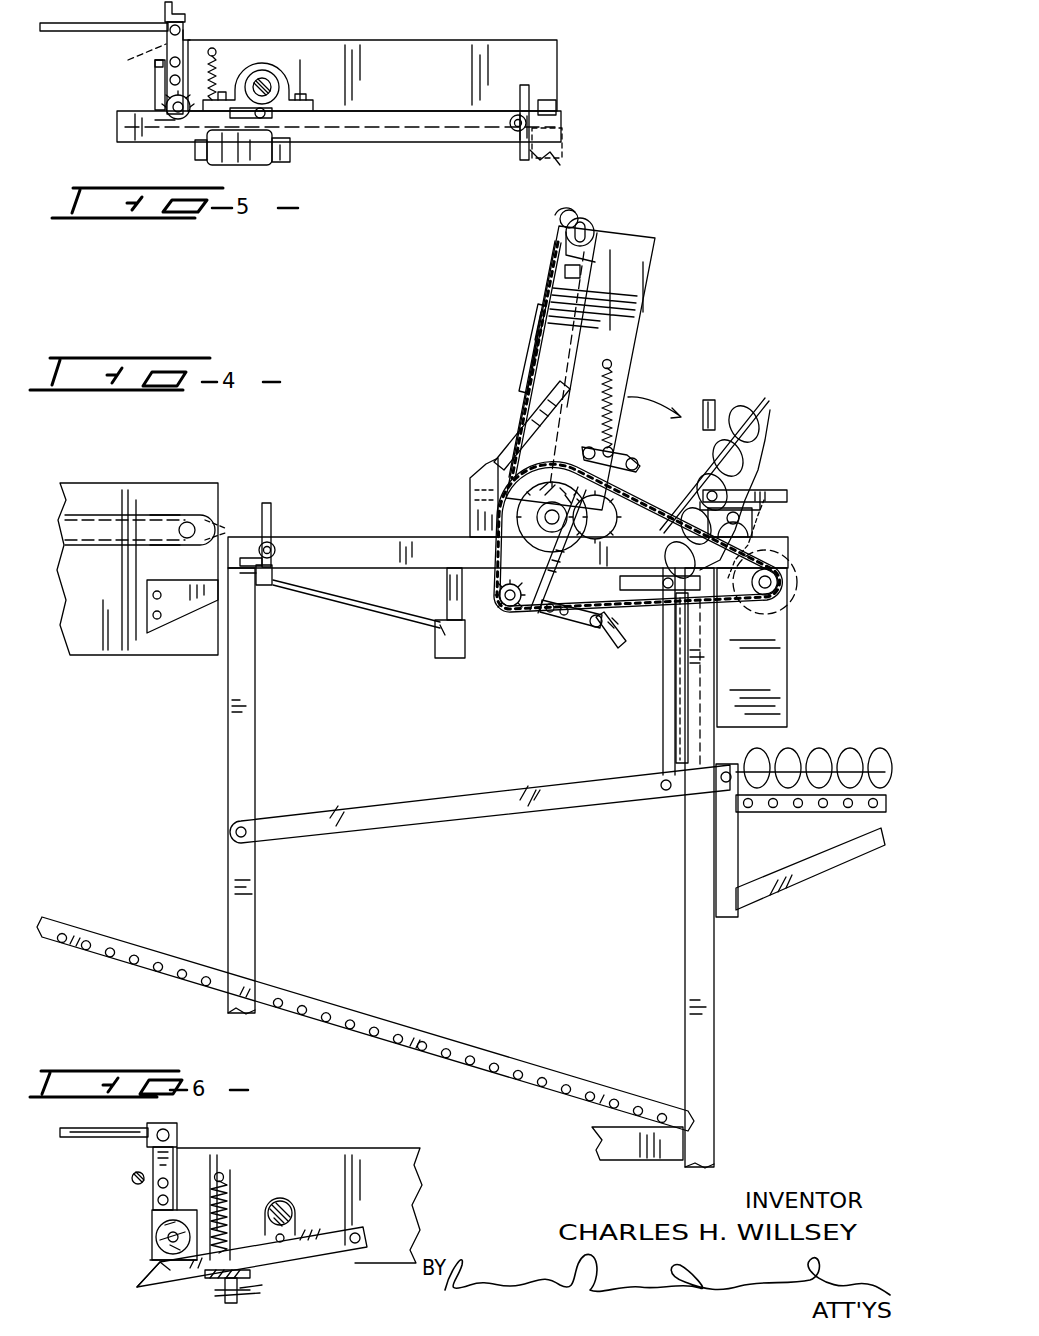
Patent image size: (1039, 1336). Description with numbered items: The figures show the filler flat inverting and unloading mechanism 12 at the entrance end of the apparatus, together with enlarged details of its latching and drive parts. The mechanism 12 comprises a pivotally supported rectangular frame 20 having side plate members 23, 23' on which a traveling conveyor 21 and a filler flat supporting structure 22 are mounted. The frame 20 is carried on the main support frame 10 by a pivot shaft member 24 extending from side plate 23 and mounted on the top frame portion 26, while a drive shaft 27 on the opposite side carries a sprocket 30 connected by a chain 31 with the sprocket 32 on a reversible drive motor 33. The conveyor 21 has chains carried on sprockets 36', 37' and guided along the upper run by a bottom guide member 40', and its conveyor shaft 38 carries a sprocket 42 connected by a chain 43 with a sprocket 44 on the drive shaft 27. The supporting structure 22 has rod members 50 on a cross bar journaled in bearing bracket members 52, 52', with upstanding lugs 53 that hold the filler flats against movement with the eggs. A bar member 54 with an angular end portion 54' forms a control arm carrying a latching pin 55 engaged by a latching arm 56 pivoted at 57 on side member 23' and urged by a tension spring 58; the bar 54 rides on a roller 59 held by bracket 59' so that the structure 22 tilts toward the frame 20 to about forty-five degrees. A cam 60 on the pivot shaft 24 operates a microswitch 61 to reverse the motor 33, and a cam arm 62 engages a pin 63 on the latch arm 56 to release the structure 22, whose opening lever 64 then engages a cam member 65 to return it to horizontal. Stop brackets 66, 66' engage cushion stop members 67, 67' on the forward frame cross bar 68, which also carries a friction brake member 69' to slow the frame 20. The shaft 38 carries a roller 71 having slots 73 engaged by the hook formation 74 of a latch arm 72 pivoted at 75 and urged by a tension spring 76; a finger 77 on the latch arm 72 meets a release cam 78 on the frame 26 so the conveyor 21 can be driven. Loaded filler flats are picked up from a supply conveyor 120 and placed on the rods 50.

In FIG. 4, the main support frame 10 is at (212, 739).
In FIG. 4, the filler flat inverting and unloading mechanism 12 is at (700, 246).
In FIG. 4, the rectangular frame 20 is at (630, 232).
In FIG. 4, the traveling conveyor 21 is at (567, 300).
In FIG. 4, the filler flat supporting structure 22 is at (755, 430).
In FIG. 5, the side plate member 23 is at (372, 63).
In FIG. 6, the side plate member 23 is at (299, 1192).
In FIG. 4, the side plate member 23' is at (599, 361).
In FIG. 6, the pivot shaft member 24 is at (286, 1205).
In FIG. 5, the top frame portion 26 is at (130, 140).
In FIG. 4, the drive shaft 27 is at (545, 516).
In FIG. 4, the sprocket 30 is at (505, 478).
In FIG. 4, the chain 31 is at (648, 592).
In FIG. 4, the sprocket 32 is at (779, 588).
In FIG. 4, the drive motor 33 is at (798, 565).
In FIG. 4, the sprocket 36' is at (595, 203).
In FIG. 4, the sprocket 37' is at (498, 611).
In FIG. 4, the conveyor shaft 38 is at (447, 588).
In FIG. 6, the conveyor shaft 38 is at (155, 1255).
In FIG. 4, the bottom guide member 40' is at (523, 348).
In FIG. 4, the sprocket 42 is at (515, 612).
In FIG. 4, the chain 43 is at (550, 608).
In FIG. 4, the sprocket 44 is at (470, 485).
In FIG. 5, the rod members 50 is at (88, 31).
In FIG. 6, the rod members 50 is at (78, 1140).
In FIG. 5, the bearing bracket member 52 is at (198, 63).
In FIG. 6, the bearing bracket member 52 is at (183, 1132).
In FIG. 4, the bearing bracket member 52' is at (571, 638).
In FIG. 5, the upstanding lugs 53 is at (163, 5).
In FIG. 4, the bar member 54 is at (767, 487).
In FIG. 4, the angular end portion 54' is at (758, 479).
In FIG. 4, the latching pin 55 is at (720, 492).
In FIG. 4, the latching arm 56 is at (606, 446).
In FIG. 4, the pivot 57 is at (590, 440).
In FIG. 4, the tension spring 58 is at (612, 398).
In FIG. 4, the roller 59 is at (768, 516).
In FIG. 4, the bracket 59' is at (775, 528).
In FIG. 5, the cam 60 is at (280, 80).
In FIG. 5, the microswitch 61 is at (262, 160).
In FIG. 4, the cam arm 62 is at (508, 450).
In FIG. 4, the pin 63 is at (638, 458).
In FIG. 5, the opening lever 64 is at (141, 58).
In FIG. 4, the opening lever 64 is at (620, 648).
In FIG. 6, the opening lever 64 is at (150, 1172).
In FIG. 5, the cam member 65 is at (155, 65).
In FIG. 6, the cam member 65 is at (132, 1178).
In FIG. 5, the stop bracket 66 is at (572, 97).
In FIG. 4, the stop bracket 66' is at (599, 273).
In FIG. 5, the cushion stop member 67 is at (560, 124).
In FIG. 4, the cushion stop member 67' is at (251, 526).
In FIG. 5, the forward frame cross bar 68 is at (562, 142).
In FIG. 4, the forward frame cross bar 68 is at (268, 585).
In FIG. 5, the friction brake member 69' is at (516, 109).
In FIG. 4, the friction brake member 69' is at (289, 527).
In FIG. 6, the roller 71 is at (160, 1236).
In FIG. 6, the latch arm 72 is at (272, 1248).
In FIG. 6, the slots 73 is at (181, 1190).
In FIG. 6, the hook formation 74 is at (150, 1282).
In FIG. 6, the pivot 75 is at (358, 1245).
In FIG. 6, the tension spring 76 is at (228, 1210).
In FIG. 6, the finger 77 is at (245, 1300).
In FIG. 6, the release cam 78 is at (210, 1280).
In FIG. 4, the supply conveyor 120 is at (870, 762).